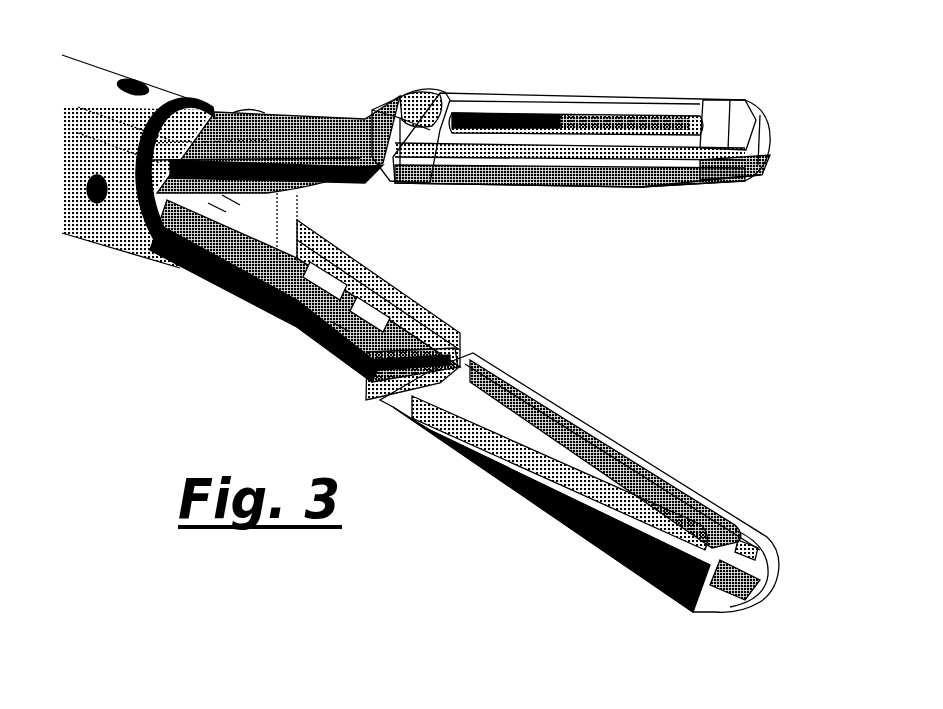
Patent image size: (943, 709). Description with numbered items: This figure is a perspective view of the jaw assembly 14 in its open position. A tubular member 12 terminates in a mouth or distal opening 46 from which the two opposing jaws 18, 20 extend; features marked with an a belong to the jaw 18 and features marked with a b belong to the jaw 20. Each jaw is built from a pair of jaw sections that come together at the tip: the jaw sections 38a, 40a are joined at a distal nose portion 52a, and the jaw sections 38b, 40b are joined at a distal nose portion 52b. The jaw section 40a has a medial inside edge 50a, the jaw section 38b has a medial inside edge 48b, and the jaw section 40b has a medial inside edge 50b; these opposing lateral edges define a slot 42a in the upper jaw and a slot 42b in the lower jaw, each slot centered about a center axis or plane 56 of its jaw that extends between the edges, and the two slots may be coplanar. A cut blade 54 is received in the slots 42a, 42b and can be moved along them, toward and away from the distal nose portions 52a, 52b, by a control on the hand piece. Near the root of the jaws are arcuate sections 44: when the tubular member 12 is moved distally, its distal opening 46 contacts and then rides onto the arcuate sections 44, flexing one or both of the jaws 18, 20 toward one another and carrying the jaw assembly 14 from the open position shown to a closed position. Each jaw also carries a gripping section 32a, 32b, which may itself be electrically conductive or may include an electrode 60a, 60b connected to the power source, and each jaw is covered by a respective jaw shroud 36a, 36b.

The tubular member 12 is at (163, 100).
The jaw assembly 14 is at (480, 337).
The jaw 18 is at (605, 123).
The jaw 20 is at (639, 511).
The gripping section 32a is at (581, 165).
The electrode 60a is at (557, 190).
The gripping section 32b is at (579, 482).
The electrode 60b is at (580, 425).
The jaw shroud 36a is at (590, 110).
The jaw shroud 36b is at (560, 527).
The jaw section 38a is at (135, 212).
The jaw section 38b is at (287, 315).
The jaw section 40a is at (275, 110).
The jaw section 40b is at (321, 311).
The slot 42a is at (255, 200).
The slot 42b is at (352, 297).
The arcuate sections 44 is at (365, 120).
The distal opening 46 is at (248, 117).
The inside edge 48b is at (372, 343).
The inside edge 50a is at (232, 192).
The inside edge 50b is at (342, 326).
The distal nose portion 52a is at (730, 177).
The distal nose portion 52b is at (737, 548).
The cut blade 54 is at (218, 205).
The center axis or plane 56 is at (778, 587).